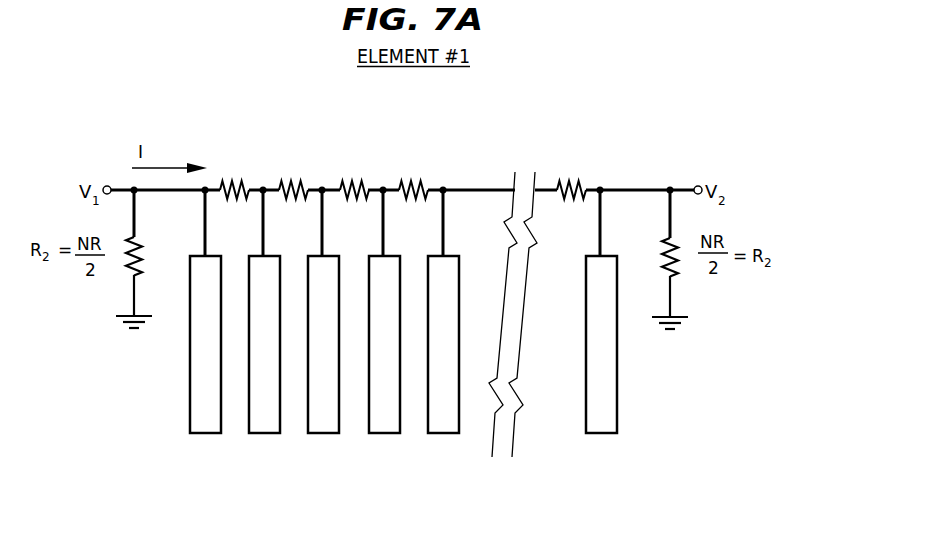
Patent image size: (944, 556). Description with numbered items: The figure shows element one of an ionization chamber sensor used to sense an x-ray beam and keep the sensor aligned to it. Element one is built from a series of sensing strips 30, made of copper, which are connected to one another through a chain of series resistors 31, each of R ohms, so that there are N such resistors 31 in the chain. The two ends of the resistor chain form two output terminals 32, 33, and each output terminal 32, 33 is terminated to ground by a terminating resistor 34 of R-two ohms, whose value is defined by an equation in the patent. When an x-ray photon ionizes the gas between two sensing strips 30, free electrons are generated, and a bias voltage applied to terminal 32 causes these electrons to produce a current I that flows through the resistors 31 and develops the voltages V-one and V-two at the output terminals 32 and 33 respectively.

The sensing strips 30 is at (313, 433).
The resistors 31 is at (287, 160).
The output terminal 32 is at (107, 186).
The output terminal 33 is at (700, 186).
The terminating resistor 34 is at (131, 268).